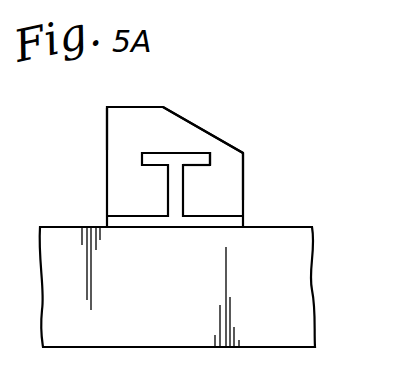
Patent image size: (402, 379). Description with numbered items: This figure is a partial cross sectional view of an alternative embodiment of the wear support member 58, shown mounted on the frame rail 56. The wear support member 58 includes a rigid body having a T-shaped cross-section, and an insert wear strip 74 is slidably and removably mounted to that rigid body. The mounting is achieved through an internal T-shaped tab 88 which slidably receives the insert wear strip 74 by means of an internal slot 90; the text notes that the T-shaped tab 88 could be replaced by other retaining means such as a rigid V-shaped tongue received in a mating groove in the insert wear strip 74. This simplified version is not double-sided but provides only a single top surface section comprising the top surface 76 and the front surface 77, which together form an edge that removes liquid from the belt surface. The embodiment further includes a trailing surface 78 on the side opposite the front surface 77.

The frame rail 56 is at (278, 273).
The wear support member 58 is at (103, 190).
The insert wear strip 74 is at (246, 158).
The top surface 76 is at (128, 107).
The front surface 77 is at (107, 123).
The trailing surface 78 is at (200, 125).
The T-shaped tab 88 is at (142, 160).
The internal slot 90 is at (198, 167).